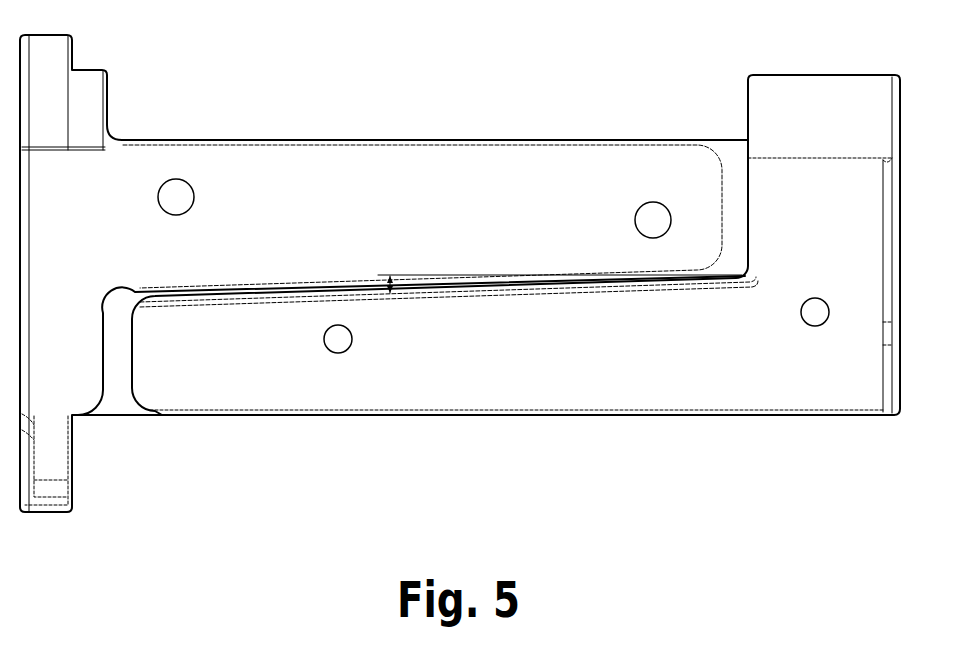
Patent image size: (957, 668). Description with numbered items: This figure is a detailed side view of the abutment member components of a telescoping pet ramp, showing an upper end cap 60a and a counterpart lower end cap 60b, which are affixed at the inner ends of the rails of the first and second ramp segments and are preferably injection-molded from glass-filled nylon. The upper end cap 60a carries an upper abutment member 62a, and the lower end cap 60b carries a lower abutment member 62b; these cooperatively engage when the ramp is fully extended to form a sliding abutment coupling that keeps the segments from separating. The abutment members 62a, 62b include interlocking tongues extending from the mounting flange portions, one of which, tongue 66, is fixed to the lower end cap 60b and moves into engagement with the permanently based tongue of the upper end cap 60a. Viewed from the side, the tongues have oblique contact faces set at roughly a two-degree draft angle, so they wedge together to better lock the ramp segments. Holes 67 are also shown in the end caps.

The upper end cap 60a is at (240, 177).
The lower end cap 60b is at (535, 387).
The upper abutment member 62a is at (468, 221).
The lower abutment member 62b is at (668, 340).
The tongue 66 is at (412, 398).
The mounting holes 67 is at (653, 228).